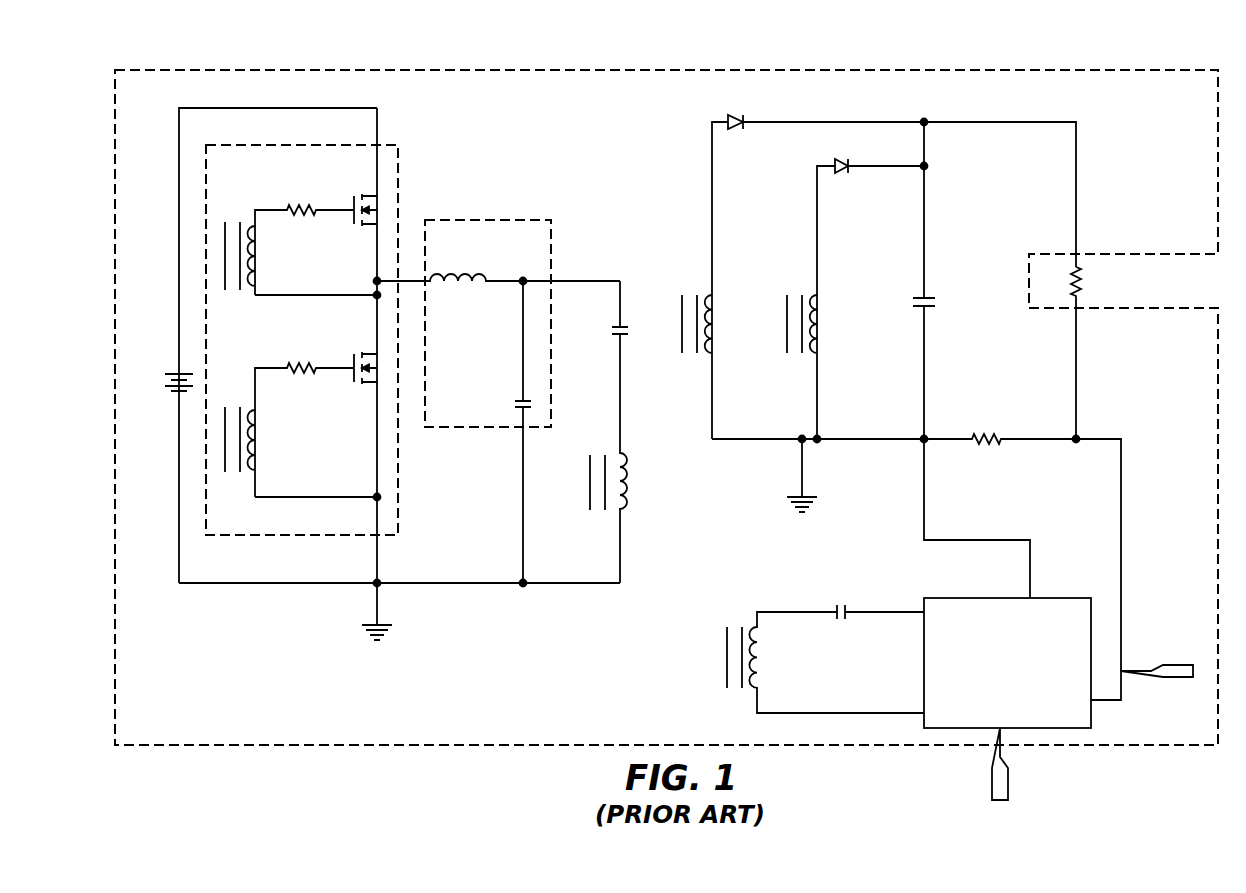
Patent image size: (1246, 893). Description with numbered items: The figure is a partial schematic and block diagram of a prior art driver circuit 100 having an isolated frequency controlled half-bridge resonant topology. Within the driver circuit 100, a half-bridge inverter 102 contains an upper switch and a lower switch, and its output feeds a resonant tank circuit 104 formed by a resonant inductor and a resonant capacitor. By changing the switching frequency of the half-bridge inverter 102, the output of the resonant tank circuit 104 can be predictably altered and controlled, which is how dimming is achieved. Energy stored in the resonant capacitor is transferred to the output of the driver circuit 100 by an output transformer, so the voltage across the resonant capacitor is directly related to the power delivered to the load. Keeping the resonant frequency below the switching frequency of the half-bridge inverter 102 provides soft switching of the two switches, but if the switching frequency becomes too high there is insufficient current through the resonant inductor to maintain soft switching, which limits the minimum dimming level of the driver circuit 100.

The driver circuit 100 is at (386, 70).
The half-bridge inverter 102 is at (392, 145).
The resonant tank circuit 104 is at (486, 220).